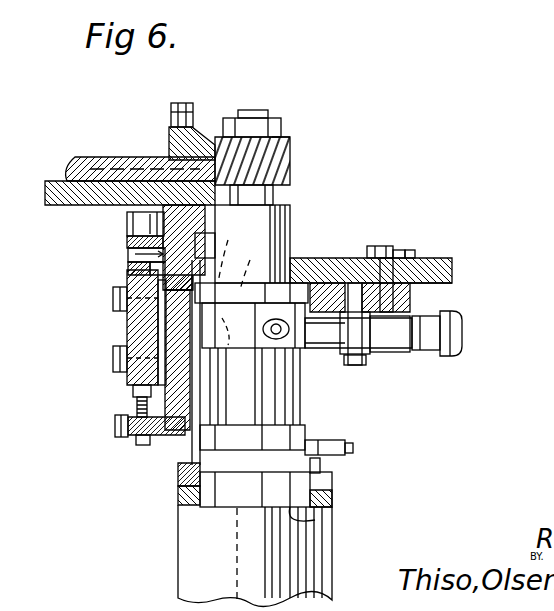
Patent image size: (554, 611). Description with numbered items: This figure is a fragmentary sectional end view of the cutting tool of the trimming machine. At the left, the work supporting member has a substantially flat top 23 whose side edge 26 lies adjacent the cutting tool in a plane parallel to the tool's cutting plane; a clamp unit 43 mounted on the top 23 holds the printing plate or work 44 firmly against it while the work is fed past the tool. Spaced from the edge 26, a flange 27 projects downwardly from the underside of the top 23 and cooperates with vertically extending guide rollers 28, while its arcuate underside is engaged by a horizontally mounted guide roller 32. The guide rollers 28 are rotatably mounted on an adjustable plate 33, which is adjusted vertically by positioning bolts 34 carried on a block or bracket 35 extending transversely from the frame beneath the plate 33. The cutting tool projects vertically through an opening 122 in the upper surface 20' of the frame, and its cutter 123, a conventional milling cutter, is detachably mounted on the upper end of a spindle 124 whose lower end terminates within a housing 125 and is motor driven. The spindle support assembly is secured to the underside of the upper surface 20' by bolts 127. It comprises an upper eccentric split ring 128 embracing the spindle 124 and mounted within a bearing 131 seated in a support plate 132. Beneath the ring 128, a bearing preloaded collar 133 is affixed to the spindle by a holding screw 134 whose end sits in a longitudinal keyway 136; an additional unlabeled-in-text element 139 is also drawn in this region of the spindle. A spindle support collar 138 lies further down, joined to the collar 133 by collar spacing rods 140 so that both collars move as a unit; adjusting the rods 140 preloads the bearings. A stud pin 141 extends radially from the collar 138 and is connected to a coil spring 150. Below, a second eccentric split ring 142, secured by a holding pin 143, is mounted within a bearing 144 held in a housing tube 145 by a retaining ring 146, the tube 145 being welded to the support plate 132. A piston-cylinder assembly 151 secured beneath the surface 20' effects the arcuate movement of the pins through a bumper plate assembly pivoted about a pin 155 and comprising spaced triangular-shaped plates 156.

The clamp unit 43 is at (168, 140).
The printing plate or work 44 is at (90, 170).
The top 23 is at (62, 196).
The side edge 26 is at (130, 205).
The guide rollers 28 is at (128, 228).
The guide roller 32 is at (128, 270).
The adjustable plate 33 is at (127, 322).
The positioning bolts 34 is at (132, 392).
The block or bracket 35 is at (128, 428).
The flange 27 is at (222, 183).
The cutter 123 is at (288, 155).
The spindle 124 is at (289, 218).
The holding screw 134 is at (241, 253).
The passage 139 is at (251, 267).
The opening 122 is at (290, 270).
The upper eccentric split ring 128 is at (296, 258).
The support plate 132 is at (410, 290).
The upper surface 20' is at (441, 256).
The bearing 131 is at (382, 246).
The bolts 127 is at (400, 250).
The triangular-shaped plates 156 is at (392, 250).
The bearing preloaded collar 133 is at (345, 330).
The pin 155 is at (420, 352).
The piston-cylinder assembly 151 is at (465, 343).
The keyway 136 is at (272, 350).
The spindle support collar 138 is at (305, 430).
The collar spacing rods 140 is at (180, 440).
The coil spring 150 is at (345, 442).
The stud pin 141 is at (355, 450).
The housing tube 145 is at (178, 478).
The bearing 144 is at (330, 482).
The retaining ring 146 is at (185, 498).
The second eccentric split ring 142 is at (315, 520).
The holding pin 143 is at (241, 554).
The housing 125 is at (330, 565).